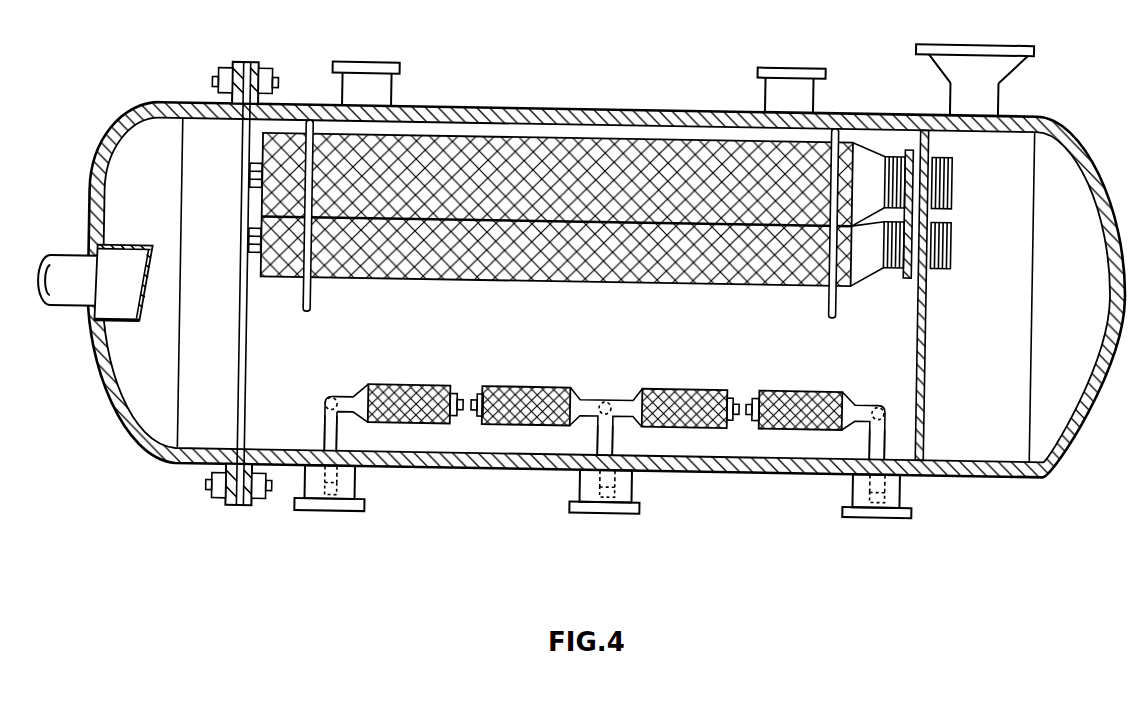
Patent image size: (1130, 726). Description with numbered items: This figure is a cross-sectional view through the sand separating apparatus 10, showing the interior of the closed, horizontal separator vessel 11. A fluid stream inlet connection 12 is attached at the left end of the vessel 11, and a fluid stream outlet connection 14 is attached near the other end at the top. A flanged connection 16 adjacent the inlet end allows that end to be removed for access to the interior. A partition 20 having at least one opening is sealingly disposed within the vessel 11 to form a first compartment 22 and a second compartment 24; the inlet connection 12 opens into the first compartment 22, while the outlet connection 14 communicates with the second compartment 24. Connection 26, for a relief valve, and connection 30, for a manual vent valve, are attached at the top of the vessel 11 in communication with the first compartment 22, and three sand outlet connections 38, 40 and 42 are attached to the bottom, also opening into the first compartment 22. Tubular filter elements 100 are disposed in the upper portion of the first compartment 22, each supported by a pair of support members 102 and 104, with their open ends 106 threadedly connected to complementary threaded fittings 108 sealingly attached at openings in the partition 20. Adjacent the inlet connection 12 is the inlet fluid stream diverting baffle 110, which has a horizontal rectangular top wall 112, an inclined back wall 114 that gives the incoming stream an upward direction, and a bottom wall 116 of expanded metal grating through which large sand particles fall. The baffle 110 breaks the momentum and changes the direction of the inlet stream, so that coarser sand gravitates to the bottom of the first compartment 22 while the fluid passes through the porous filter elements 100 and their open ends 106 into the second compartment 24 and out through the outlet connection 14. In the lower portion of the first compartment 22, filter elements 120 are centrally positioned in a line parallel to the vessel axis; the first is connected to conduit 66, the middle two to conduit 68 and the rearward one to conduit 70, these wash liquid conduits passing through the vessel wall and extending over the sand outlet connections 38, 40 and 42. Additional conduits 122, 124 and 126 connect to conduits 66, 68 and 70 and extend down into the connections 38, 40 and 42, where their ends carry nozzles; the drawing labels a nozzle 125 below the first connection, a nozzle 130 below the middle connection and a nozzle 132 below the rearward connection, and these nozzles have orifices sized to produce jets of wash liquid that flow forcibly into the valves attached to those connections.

The apparatus 10 is at (589, 100).
The separator vessel 11 is at (487, 107).
The fluid stream inlet connection 12 is at (57, 272).
The fluid stream outlet connection 14 is at (934, 69).
The flanged connection 16 is at (248, 511).
The partition 20 is at (926, 403).
The first compartment 22 is at (197, 412).
The second compartment 24 is at (1018, 163).
The connection 26 is at (392, 85).
The connection 30 is at (757, 90).
The sand outlet connection 38 is at (354, 512).
The sand outlet connection 40 is at (634, 516).
The sand outlet connection 42 is at (903, 517).
The conduit 66 is at (327, 405).
The conduit 68 is at (609, 398).
The conduit 70 is at (884, 400).
The tubular filter elements 100 is at (260, 144).
The support member 102 is at (308, 317).
The support member 104 is at (834, 314).
The open ends 106 is at (950, 179).
The threaded fittings 108 is at (926, 147).
The inlet fluid stream diverting baffle 110 is at (160, 279).
The top wall 112 is at (134, 250).
The back wall 114 is at (142, 308).
The bottom wall 116 is at (114, 330).
The filter elements 120 is at (402, 391).
The conduit 122 is at (327, 437).
The conduit 124 is at (614, 438).
The drain line 125 is at (339, 511).
The conduit 126 is at (872, 436).
The nozzle 130 is at (609, 513).
The nozzle 132 is at (884, 513).